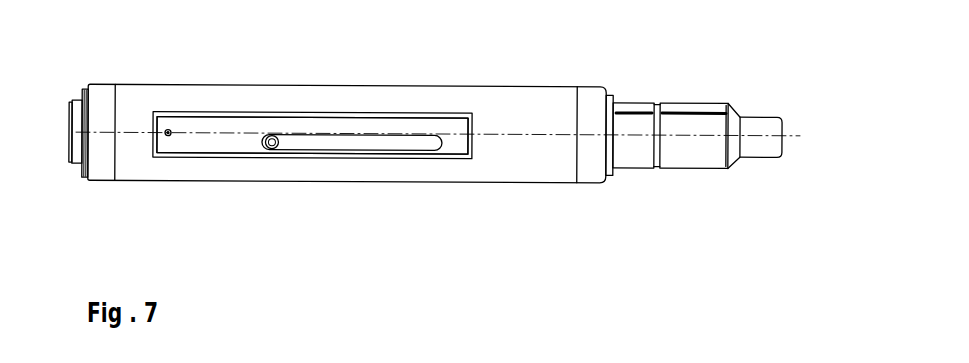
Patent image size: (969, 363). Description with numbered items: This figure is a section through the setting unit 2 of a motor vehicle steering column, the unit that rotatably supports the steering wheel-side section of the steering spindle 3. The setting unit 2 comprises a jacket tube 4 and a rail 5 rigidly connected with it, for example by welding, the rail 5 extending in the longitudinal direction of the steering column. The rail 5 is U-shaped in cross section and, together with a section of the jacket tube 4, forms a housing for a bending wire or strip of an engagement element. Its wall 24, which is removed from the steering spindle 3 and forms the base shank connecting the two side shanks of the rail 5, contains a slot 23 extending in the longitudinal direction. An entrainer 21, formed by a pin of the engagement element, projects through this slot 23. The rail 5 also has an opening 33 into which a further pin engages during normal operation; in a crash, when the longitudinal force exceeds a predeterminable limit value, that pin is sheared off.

The setting unit 2 is at (560, 86).
The steering spindle 3 is at (693, 147).
The jacket tube 4 is at (530, 172).
The rail 5 is at (453, 159).
The entrainer 21 is at (266, 148).
The slot 23 is at (412, 141).
The wall 24 is at (465, 127).
The opening 33 is at (168, 131).